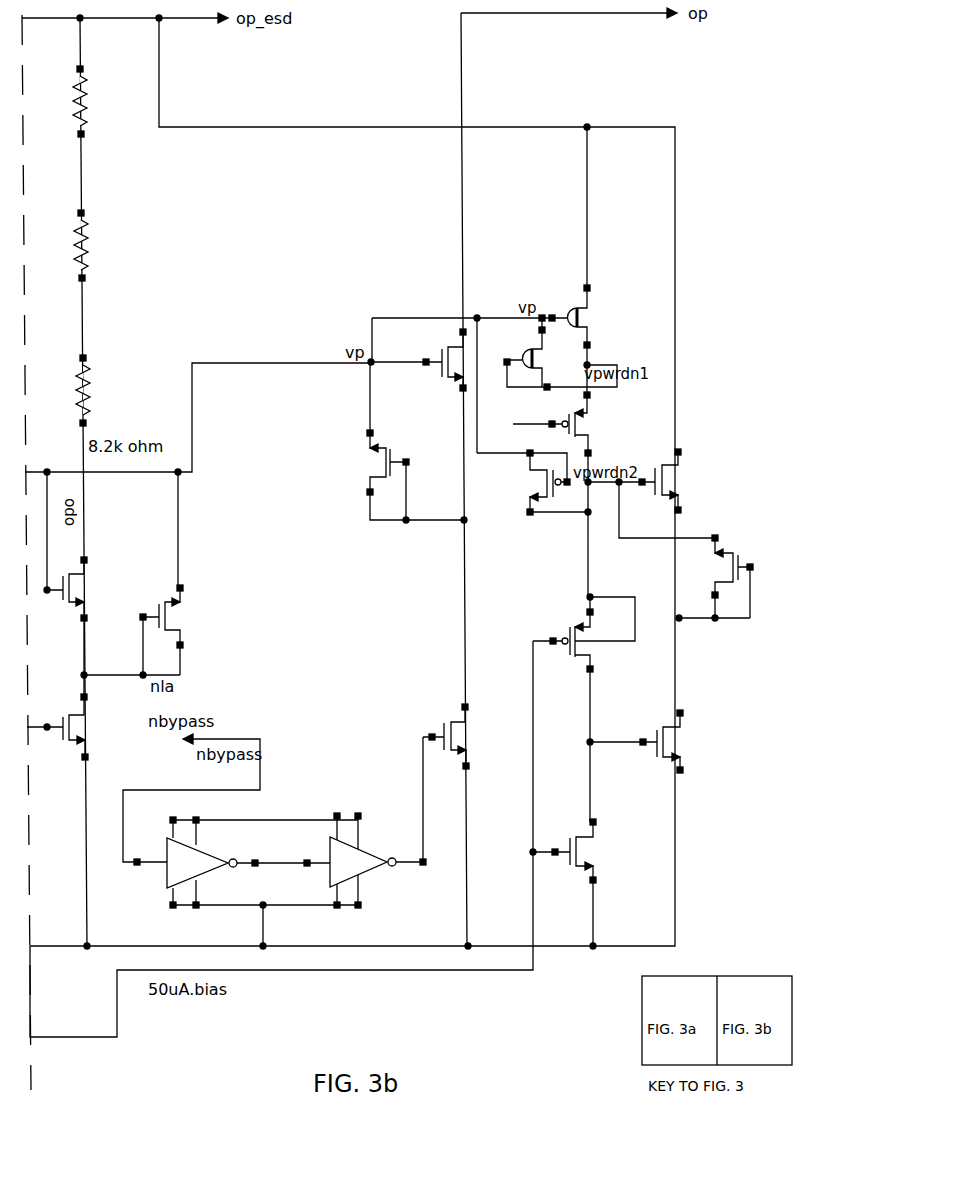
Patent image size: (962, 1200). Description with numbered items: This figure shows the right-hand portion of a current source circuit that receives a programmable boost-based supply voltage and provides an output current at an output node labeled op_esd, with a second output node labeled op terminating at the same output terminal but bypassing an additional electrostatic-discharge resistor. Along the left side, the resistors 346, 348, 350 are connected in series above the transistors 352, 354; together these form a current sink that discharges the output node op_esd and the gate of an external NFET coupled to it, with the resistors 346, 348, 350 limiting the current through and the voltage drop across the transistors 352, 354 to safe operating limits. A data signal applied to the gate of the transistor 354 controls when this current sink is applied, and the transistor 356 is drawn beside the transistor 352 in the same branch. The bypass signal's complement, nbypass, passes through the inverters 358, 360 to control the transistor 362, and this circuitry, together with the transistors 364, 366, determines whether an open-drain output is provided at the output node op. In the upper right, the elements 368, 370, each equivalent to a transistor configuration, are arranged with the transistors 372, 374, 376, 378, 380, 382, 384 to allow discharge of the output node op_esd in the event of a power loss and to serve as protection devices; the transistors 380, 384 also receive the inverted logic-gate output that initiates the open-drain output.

The resistor 346 is at (118, 115).
The resistor 348 is at (118, 240).
The resistor 350 is at (118, 385).
The transistor 352 is at (70, 608).
The transistor 354 is at (70, 748).
The transistor M1 356 is at (215, 627).
The inverter 358 is at (165, 870).
The inverter 360 is at (370, 840).
The transistor 362 is at (460, 720).
The transistor 364 is at (325, 475).
The transistor 366 is at (445, 385).
The element 368 is at (572, 290).
The element 370 is at (525, 330).
The transistor 372 is at (637, 432).
The transistor 374 is at (505, 525).
The transistor 376 is at (718, 493).
The transistor 378 is at (728, 542).
The transistor 380 is at (580, 620).
The transistor 382 is at (735, 762).
The transistor 384 is at (583, 830).